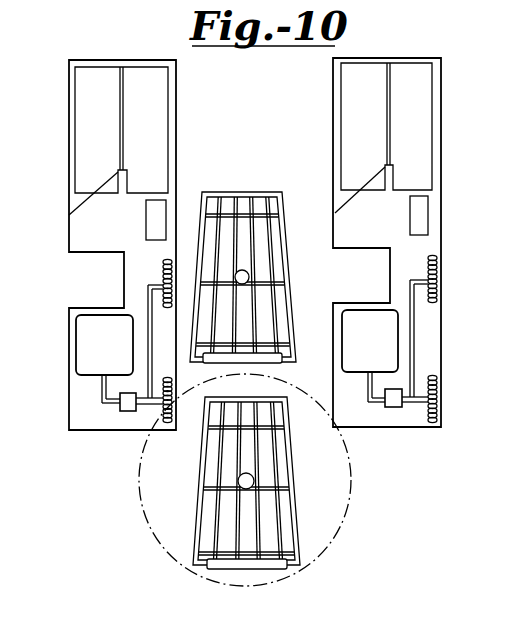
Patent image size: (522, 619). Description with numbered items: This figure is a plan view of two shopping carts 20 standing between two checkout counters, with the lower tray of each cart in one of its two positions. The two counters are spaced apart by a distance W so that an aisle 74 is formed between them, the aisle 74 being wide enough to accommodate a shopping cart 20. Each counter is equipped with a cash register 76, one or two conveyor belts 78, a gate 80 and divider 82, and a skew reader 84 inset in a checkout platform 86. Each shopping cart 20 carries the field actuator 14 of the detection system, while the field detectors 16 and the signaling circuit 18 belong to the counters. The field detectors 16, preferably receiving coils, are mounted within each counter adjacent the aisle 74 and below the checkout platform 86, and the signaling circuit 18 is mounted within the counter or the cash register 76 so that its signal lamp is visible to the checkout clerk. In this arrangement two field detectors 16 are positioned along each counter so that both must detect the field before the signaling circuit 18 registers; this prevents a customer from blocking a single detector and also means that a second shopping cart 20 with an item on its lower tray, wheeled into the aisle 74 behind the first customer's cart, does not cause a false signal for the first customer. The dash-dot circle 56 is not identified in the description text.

The field actuator 14 is at (260, 480).
The field detector 16 is at (163, 268).
The signaling circuit 18 is at (122, 416).
The shopping cart 20 is at (289, 181).
The circle 56 is at (333, 532).
The aisle 74 is at (258, 159).
The cash register 76 is at (80, 325).
The conveyor belt 78 is at (82, 102).
The gate 80 is at (85, 206).
The divider 82 is at (122, 66).
The skew reader 84 is at (168, 215).
The checkout platform 86 is at (154, 279).
The distance W is at (331, 110).